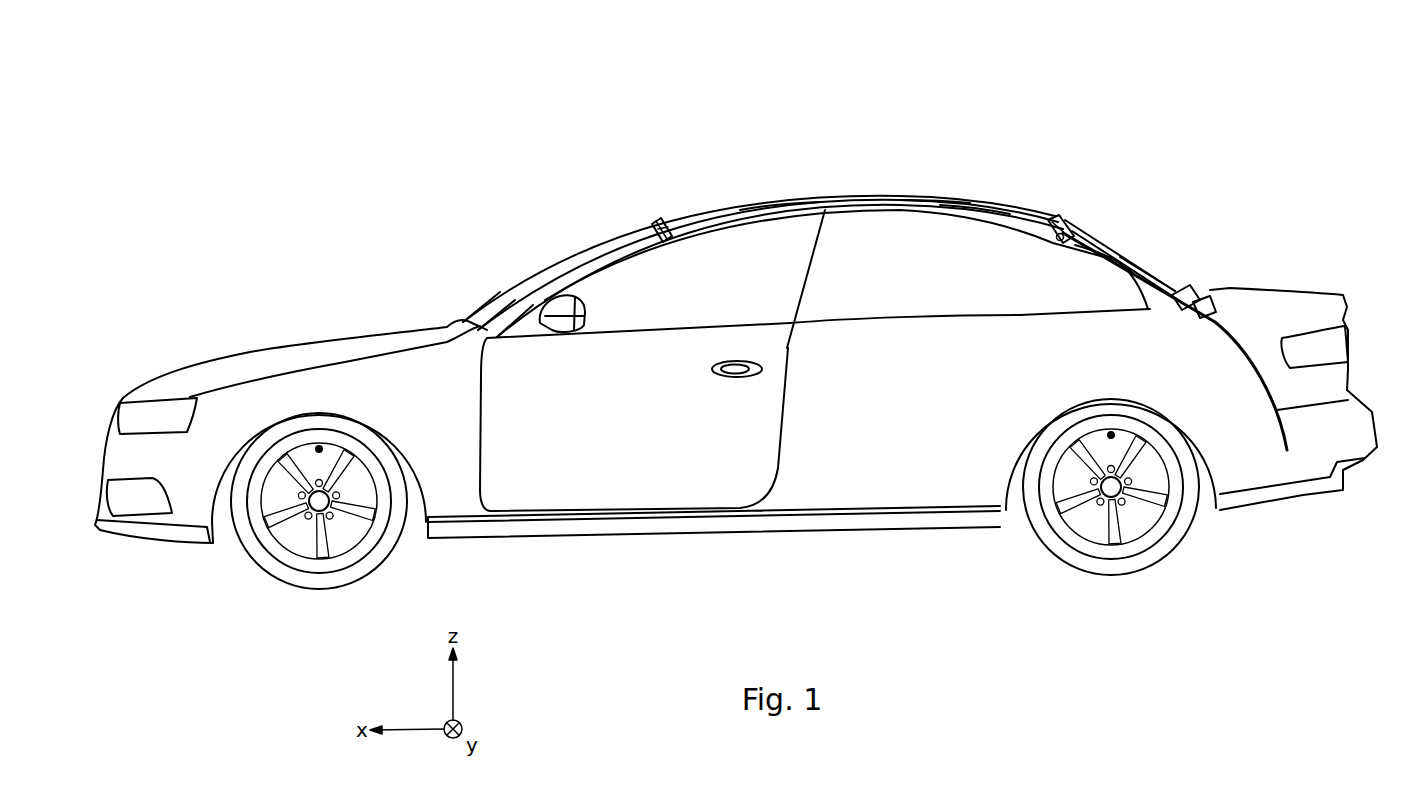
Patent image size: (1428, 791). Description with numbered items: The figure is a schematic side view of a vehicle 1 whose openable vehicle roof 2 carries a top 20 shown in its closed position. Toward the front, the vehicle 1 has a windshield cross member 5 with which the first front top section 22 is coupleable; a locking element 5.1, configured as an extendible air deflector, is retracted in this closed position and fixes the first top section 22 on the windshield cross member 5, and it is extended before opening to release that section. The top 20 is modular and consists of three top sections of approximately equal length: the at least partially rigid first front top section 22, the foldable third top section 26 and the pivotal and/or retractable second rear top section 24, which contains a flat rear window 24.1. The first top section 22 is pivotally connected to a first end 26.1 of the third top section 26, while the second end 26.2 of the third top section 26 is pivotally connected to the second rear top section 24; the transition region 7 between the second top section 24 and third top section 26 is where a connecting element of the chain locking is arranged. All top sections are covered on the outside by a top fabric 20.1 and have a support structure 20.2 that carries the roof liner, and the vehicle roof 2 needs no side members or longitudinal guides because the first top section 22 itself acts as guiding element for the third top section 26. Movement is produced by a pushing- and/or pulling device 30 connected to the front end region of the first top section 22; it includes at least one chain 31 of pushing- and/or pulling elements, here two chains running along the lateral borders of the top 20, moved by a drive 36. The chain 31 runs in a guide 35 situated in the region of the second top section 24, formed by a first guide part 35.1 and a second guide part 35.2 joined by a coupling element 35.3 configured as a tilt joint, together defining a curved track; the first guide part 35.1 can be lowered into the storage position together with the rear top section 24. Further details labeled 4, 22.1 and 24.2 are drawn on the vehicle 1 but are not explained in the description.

The vehicle 1 is at (280, 188).
The vehicle roof 2 is at (805, 153).
The A-pillar 4 is at (557, 272).
The windshield cross member 5 is at (656, 228).
The locking element 5.1 is at (660, 222).
The transition region 7 is at (1082, 210).
The top 20 is at (886, 175).
The top fabric 20.1 is at (970, 198).
The support structure 20.2 is at (890, 232).
The first front top section 22 is at (752, 203).
The roof strut end 22.1 is at (658, 238).
The second rear top section 24 is at (1113, 233).
The flat rear window 24.1 is at (1157, 262).
The C-pillar strut 24.2 is at (1140, 285).
The third top section 26 is at (922, 198).
The first end of the third top section 26.1 is at (825, 210).
The second end of the third top section 26.2 is at (1052, 217).
The pushing- and/or pulling device 30 is at (1017, 190).
The chain 31 is at (770, 212).
The guide 35 is at (1250, 322).
The first guide part 35.1 is at (1115, 262).
The second guide part 35.2 is at (1352, 397).
The coupling element 35.3 is at (1197, 300).
The drive 36 is at (1058, 243).